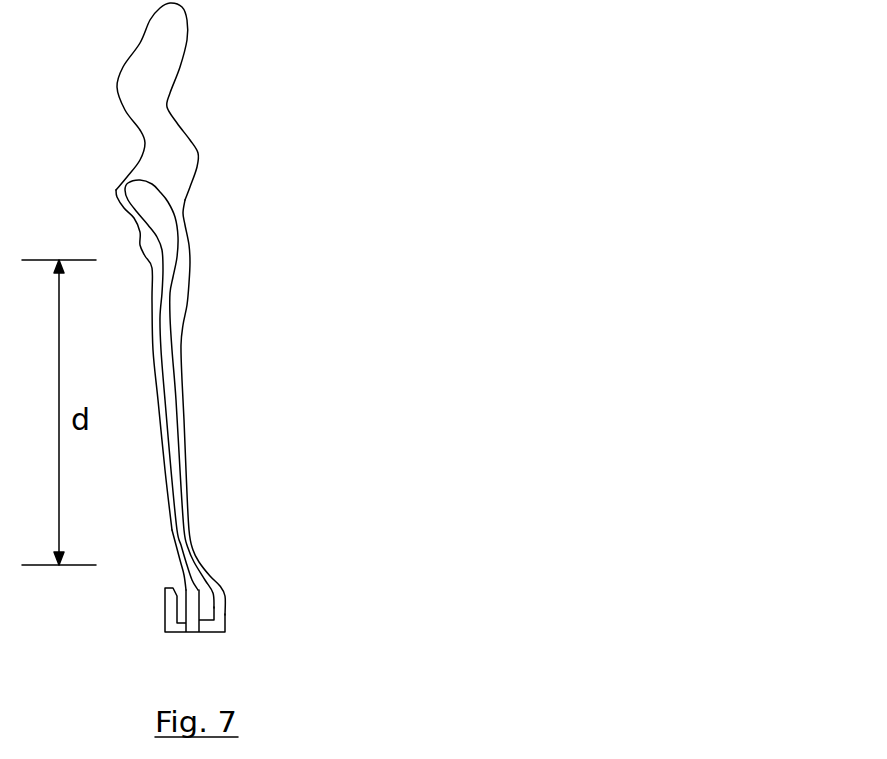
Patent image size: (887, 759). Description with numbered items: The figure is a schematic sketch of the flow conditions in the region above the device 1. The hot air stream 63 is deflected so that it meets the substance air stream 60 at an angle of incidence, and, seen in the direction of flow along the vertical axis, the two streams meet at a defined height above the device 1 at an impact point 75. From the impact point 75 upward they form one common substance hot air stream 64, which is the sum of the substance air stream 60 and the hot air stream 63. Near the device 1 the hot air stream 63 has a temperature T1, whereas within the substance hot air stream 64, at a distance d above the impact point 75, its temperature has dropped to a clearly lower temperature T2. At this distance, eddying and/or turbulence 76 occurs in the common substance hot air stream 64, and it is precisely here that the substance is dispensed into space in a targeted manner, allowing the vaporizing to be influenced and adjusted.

The device 1 is at (231, 598).
The substance air stream 60 is at (175, 293).
The hot air stream 63 is at (178, 250).
The substance hot air stream 64 is at (305, 312).
The impact point 75 is at (166, 568).
The eddying and/or turbulence 76 is at (190, 206).